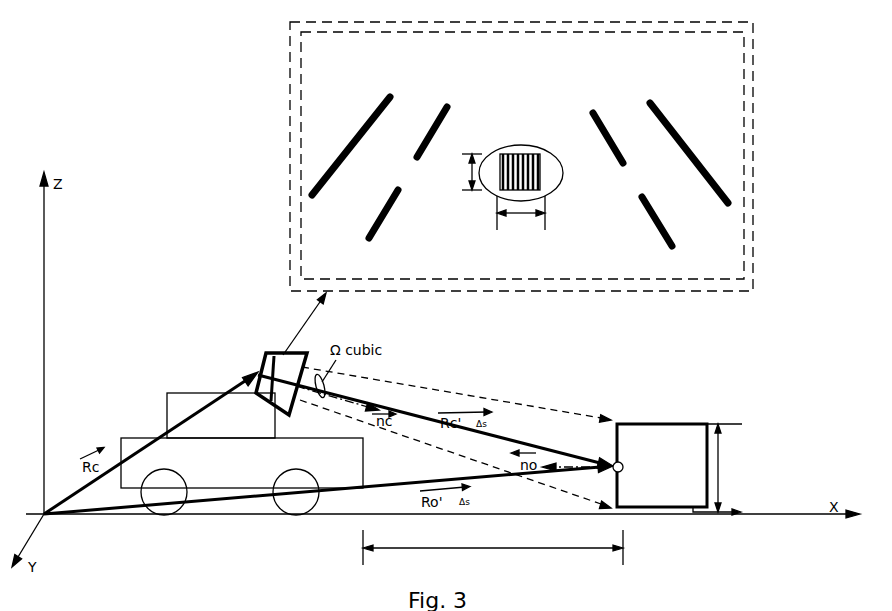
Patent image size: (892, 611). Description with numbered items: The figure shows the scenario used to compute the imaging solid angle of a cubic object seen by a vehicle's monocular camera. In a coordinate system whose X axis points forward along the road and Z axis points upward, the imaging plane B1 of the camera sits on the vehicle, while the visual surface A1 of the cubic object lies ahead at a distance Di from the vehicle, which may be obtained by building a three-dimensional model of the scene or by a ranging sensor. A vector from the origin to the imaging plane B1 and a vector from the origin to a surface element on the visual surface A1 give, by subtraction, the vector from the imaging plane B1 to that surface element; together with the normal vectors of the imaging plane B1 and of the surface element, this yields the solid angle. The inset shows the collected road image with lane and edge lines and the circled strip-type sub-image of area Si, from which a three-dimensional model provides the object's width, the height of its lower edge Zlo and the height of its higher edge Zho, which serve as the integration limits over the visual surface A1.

The imaging plane of the monocular camera B1 is at (291, 354).
The visual surface of the cubic object A1 is at (660, 465).
The area of the sub-image Si is at (547, 193).
The height of the higher edge Zho is at (613, 322).
The height of the lower edge Zlo is at (610, 363).
The distance between the object to be identified and the vehicle Di is at (493, 555).